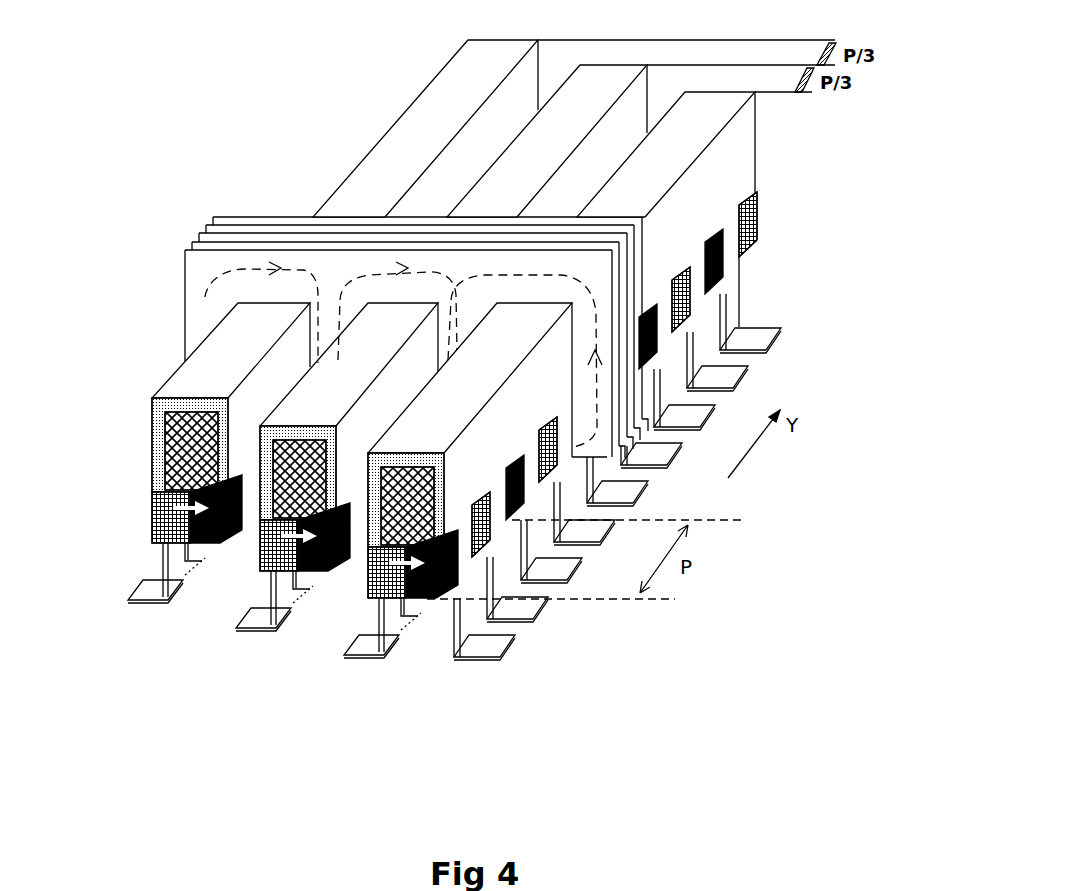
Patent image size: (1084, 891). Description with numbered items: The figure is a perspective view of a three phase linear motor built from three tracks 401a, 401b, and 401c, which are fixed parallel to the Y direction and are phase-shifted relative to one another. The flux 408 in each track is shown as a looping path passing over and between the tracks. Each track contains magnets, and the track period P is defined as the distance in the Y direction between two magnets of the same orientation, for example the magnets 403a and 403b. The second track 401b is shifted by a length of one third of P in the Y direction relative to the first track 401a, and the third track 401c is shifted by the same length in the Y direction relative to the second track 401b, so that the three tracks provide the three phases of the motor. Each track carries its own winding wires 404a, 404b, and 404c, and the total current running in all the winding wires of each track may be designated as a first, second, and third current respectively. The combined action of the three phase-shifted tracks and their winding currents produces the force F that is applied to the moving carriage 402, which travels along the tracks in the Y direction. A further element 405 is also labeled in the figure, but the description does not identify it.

The first track 401a is at (465, 82).
The second track 401b is at (528, 165).
The third track 401c is at (625, 192).
The moving carriage 402 is at (215, 270).
The magnet 403a is at (457, 580).
The magnet 403b is at (523, 503).
The winding wires 404a is at (173, 413).
The winding wires 404b is at (273, 460).
The winding wires 404c is at (430, 470).
The support member 405 is at (475, 526).
The flux 408 is at (205, 297).